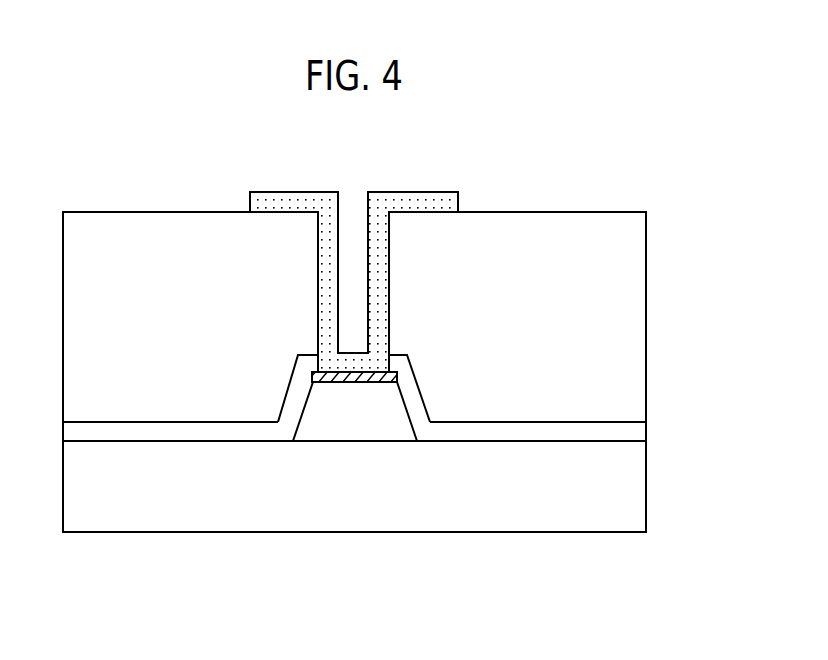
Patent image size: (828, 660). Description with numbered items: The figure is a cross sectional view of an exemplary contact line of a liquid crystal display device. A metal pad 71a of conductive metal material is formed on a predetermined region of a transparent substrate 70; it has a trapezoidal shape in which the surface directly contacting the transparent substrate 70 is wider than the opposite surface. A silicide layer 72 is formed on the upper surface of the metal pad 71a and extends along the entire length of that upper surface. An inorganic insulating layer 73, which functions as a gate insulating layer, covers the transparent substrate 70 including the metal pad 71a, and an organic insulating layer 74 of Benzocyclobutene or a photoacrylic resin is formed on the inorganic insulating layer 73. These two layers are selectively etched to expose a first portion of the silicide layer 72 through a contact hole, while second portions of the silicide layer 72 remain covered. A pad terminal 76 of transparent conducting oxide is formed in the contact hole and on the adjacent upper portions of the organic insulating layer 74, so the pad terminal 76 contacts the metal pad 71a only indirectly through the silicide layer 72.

The transparent substrate 70 is at (623, 498).
The metal pad 71a is at (359, 423).
The silicide layer 72 is at (392, 377).
The inorganic insulating layer 73 is at (623, 433).
The organic insulating layer 74 is at (623, 326).
The pad terminal 76 is at (383, 250).